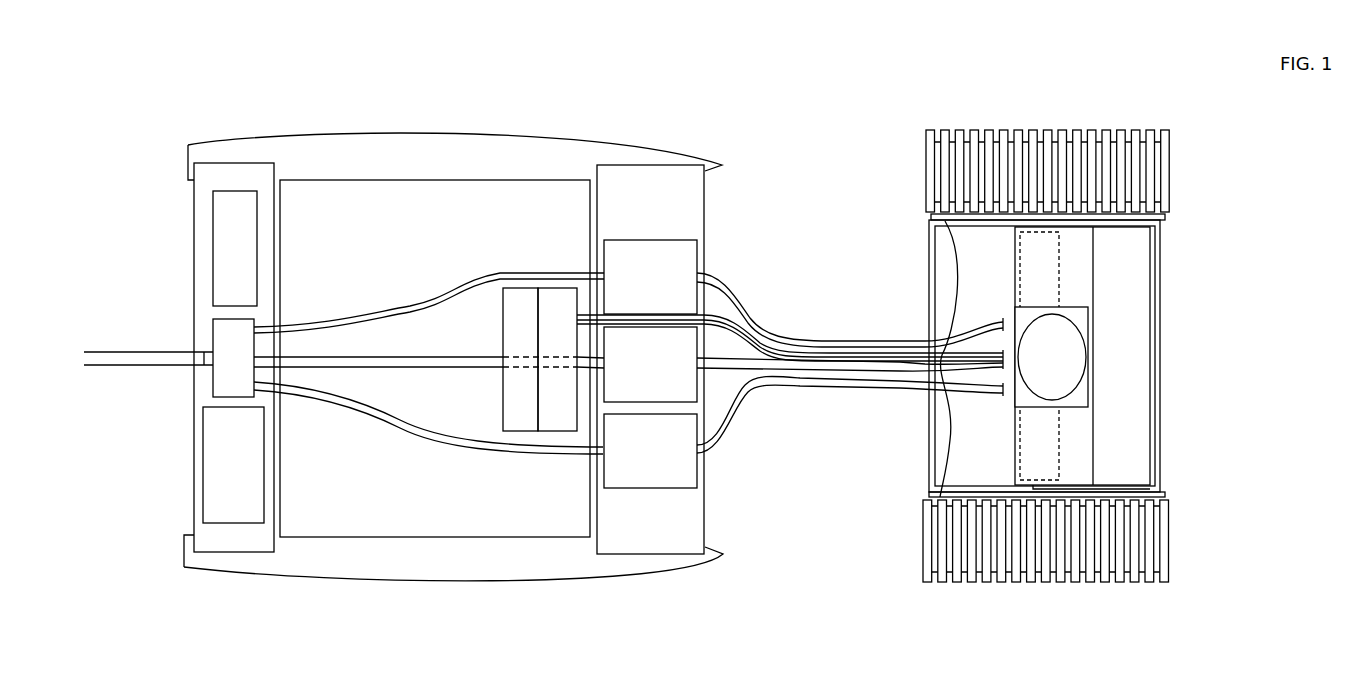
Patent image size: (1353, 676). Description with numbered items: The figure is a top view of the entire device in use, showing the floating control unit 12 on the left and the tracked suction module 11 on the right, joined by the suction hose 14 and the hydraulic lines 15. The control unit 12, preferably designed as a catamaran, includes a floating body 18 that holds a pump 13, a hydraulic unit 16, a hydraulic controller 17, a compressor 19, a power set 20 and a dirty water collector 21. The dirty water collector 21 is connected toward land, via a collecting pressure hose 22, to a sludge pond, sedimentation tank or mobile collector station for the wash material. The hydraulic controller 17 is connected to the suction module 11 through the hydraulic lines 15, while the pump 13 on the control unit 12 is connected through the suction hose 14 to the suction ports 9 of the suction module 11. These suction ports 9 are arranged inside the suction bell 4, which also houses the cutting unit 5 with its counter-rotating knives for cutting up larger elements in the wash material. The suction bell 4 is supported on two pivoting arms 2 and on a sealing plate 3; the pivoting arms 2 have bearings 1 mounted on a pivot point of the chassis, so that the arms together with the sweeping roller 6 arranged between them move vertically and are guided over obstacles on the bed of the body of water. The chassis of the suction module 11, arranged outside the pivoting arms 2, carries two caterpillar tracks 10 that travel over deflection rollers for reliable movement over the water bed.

The bearing 1 is at (1117, 484).
The pivoting arm 2 is at (1157, 489).
The sealing plate 3 is at (1115, 280).
The suction bell 4 is at (1096, 255).
The cutting unit 5 is at (1083, 342).
The sweeping roller 6 is at (1060, 447).
The suction port 9 is at (1010, 322).
The caterpillar track 10 is at (1167, 149).
The suction module 11 is at (1160, 297).
The control unit 12 is at (705, 208).
The pump 13 is at (695, 263).
The suction hose 14 is at (723, 284).
The hydraulic line 15 is at (727, 320).
The hydraulic unit 16 is at (553, 298).
The hydraulic controller 17 is at (513, 297).
The floating body 18 is at (581, 148).
The compressor 19 is at (225, 231).
The power set 20 is at (215, 461).
The dirty water collector 21 is at (223, 361).
The collecting pressure hose 22 is at (130, 351).